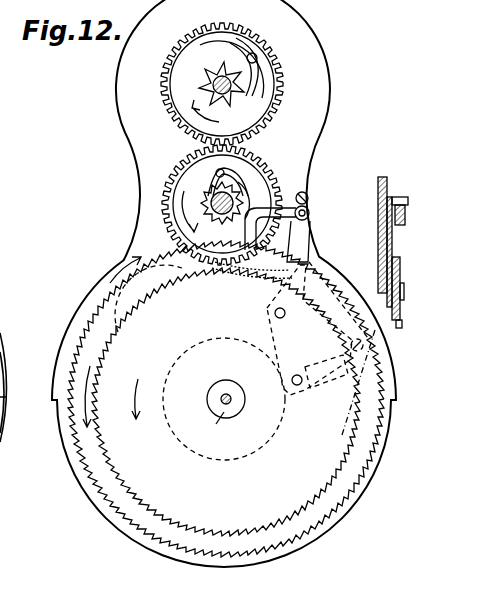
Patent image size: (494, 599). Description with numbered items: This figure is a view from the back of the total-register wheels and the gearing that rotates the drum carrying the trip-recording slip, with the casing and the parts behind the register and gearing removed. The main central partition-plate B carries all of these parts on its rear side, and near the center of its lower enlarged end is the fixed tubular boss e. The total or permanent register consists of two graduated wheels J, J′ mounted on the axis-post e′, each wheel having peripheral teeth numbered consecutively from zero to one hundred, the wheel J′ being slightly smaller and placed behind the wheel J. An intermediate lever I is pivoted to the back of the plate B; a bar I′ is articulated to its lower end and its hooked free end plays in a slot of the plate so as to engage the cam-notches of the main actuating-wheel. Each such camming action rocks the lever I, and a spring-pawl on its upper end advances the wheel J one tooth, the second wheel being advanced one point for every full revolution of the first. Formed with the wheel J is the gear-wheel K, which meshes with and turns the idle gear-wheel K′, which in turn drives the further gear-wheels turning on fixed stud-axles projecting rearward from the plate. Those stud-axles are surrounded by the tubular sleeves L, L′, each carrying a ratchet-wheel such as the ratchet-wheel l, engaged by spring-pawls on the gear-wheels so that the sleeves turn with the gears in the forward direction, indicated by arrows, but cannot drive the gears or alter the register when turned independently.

The main central partition-plate B is at (379, 204).
The gear-wheel K is at (221, 396).
The idle gear-wheel K′ is at (226, 393).
The tubular sleeve L is at (240, 192).
The tubular sleeve L′ is at (244, 72).
The ratchet-wheel l is at (277, 228).
The intermediate lever I is at (388, 236).
The bar I′ is at (340, 382).
The total-register wheel J is at (393, 269).
The total-register wheel J′ is at (309, 330).
The pin j is at (220, 418).
The pin j′ is at (405, 291).
The spring i is at (247, 199).
The fixed tubular boss or stud-shaft e is at (356, 352).
The axis-post e′ is at (232, 403).